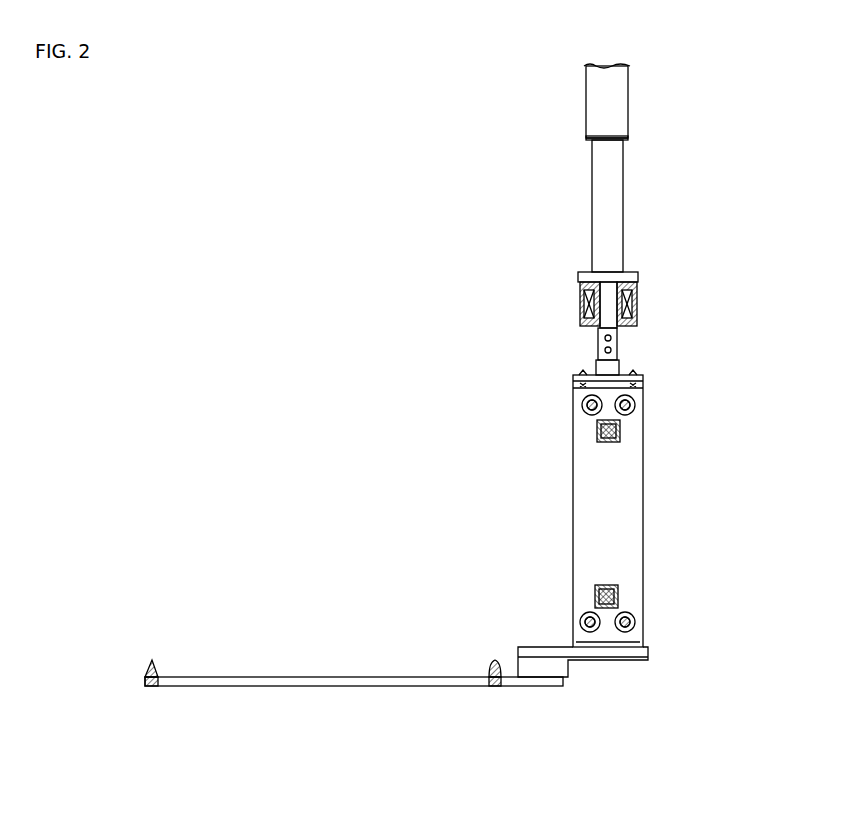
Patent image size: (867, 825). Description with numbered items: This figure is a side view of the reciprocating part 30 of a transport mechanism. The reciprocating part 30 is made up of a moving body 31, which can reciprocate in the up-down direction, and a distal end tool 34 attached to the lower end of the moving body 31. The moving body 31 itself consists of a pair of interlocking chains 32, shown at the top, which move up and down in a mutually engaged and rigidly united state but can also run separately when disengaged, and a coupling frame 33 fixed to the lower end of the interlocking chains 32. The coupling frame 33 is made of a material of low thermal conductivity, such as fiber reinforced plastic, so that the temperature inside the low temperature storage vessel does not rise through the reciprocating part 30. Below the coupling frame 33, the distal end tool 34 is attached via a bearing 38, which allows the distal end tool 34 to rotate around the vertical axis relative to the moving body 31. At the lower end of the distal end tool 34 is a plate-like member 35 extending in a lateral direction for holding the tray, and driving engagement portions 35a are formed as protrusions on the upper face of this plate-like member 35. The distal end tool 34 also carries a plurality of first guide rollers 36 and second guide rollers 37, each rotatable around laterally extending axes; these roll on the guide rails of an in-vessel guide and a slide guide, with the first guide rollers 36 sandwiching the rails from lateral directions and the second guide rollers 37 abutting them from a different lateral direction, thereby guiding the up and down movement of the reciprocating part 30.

The reciprocating part 30 is at (255, 226).
The moving body 31 is at (742, 97).
The interlocking chains 32 is at (612, 106).
The coupling frame 33 is at (612, 203).
The distal end tool 34 is at (628, 512).
The plate-like member 35 is at (357, 682).
The driving engagement portions 35a is at (152, 660).
The first guide rollers 36 is at (582, 405).
The second guide rollers 37 is at (600, 435).
The bearing 38 is at (576, 293).